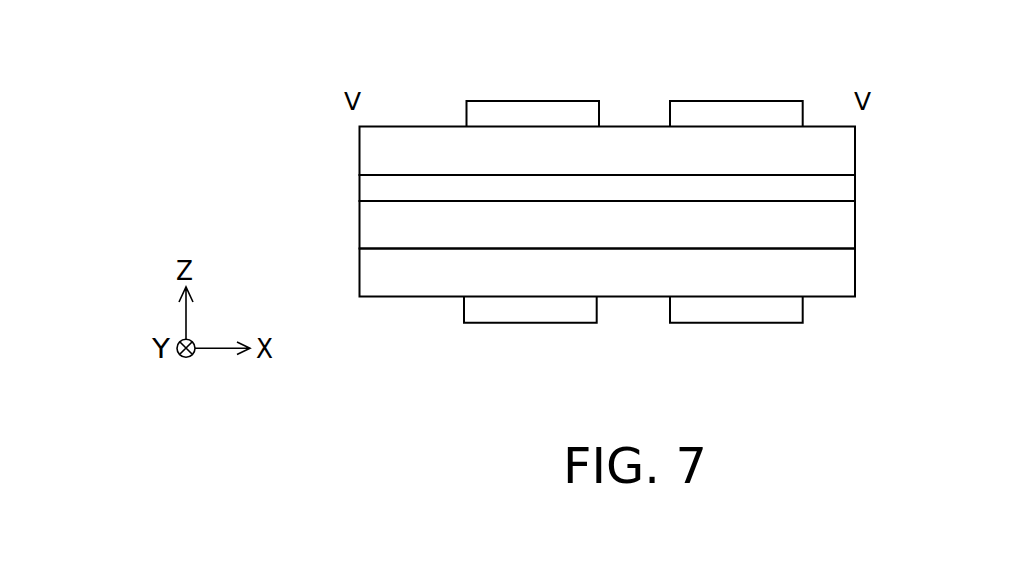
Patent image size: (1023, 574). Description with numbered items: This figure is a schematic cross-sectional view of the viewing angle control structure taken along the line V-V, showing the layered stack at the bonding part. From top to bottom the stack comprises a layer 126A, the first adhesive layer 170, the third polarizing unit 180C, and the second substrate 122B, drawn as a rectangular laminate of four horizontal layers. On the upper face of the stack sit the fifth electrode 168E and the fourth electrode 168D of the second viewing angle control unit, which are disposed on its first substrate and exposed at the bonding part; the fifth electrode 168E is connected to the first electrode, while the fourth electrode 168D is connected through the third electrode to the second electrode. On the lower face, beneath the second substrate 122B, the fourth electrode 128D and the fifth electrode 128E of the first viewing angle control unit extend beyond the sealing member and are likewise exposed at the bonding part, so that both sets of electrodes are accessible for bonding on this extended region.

The first conductive layer 126A is at (838, 152).
The first adhesive layer 170 is at (838, 190).
The third polarizing unit 180C is at (838, 227).
The second substrate 122B is at (838, 273).
The fifth electrode 168E is at (533, 115).
The fourth electrode 168D is at (740, 115).
The fourth electrode 128D is at (533, 308).
The fifth electrode 128E is at (740, 308).